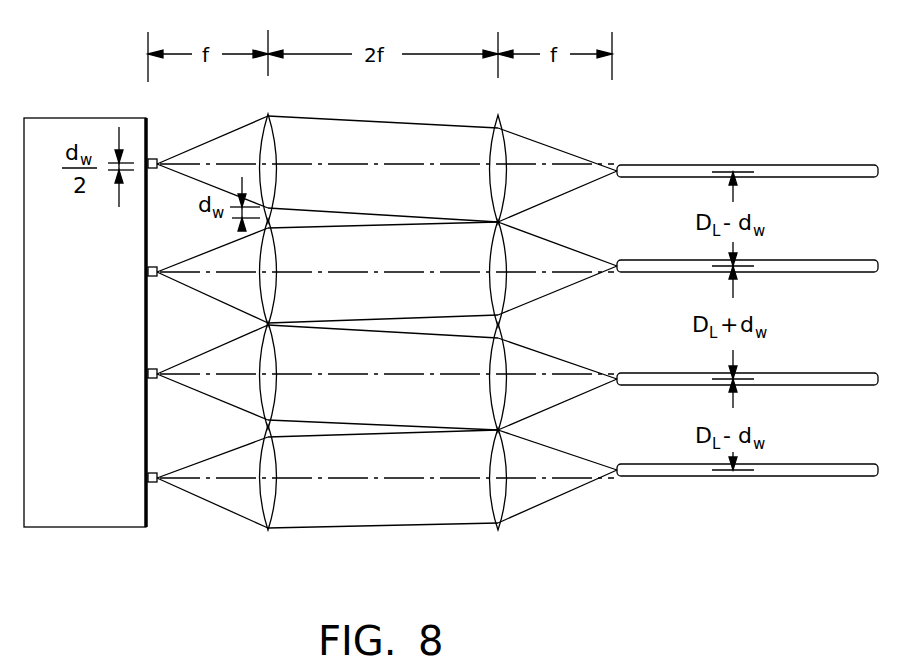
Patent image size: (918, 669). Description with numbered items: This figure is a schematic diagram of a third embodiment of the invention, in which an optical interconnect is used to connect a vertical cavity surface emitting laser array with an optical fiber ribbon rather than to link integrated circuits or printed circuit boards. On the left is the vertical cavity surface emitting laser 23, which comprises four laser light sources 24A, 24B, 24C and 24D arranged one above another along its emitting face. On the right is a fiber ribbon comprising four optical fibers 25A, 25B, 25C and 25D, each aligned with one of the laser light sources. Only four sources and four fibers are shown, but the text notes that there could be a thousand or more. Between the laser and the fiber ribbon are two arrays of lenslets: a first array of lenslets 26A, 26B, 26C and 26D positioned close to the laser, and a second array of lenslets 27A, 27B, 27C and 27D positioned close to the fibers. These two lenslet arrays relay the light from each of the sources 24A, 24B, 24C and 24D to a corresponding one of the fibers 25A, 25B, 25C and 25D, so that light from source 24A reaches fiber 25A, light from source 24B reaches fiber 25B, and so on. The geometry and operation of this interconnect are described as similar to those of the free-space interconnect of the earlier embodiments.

The vertical cavity surface emitting laser 23 is at (77, 118).
The laser light source 24A is at (157, 158).
The laser light source 24B is at (153, 267).
The laser light source 24C is at (155, 369).
The laser light source 24D is at (155, 473).
The lenslet 26A is at (269, 117).
The lenslet 26B is at (276, 246).
The lenslet 26C is at (276, 350).
The lenslet 26D is at (276, 457).
The lenslet 27A is at (489, 149).
The lenslet 27B is at (489, 252).
The lenslet 27C is at (489, 357).
The lenslet 27D is at (489, 463).
The optical fiber 25A is at (642, 165).
The optical fiber 25B is at (672, 260).
The optical fiber 25C is at (672, 373).
The optical fiber 25D is at (672, 464).